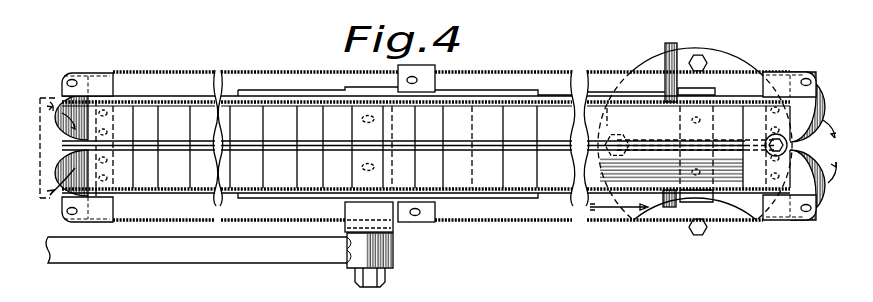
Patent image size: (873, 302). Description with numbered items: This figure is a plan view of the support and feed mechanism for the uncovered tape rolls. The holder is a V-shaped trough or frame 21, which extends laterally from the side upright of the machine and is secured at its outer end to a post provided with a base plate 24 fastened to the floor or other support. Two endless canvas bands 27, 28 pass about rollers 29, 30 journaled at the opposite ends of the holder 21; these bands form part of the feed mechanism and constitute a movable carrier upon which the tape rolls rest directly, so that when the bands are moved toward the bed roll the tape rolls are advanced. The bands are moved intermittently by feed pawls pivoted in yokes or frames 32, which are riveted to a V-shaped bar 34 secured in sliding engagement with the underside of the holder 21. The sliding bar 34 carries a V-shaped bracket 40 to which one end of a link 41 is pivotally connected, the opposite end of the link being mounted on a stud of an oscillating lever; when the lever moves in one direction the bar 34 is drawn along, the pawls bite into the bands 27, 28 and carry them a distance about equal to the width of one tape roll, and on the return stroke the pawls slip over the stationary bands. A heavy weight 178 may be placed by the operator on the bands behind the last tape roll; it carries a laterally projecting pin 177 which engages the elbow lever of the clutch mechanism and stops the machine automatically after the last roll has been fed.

The V-shaped trough or frame 21 is at (556, 193).
The base plate 24 is at (672, 242).
The endless band 27 is at (490, 219).
The endless band 28 is at (490, 72).
The roller 29 is at (806, 74).
The roller 30 is at (63, 78).
The yoke or frame 32 is at (433, 67).
The V-shaped bar 34 is at (518, 198).
The V-shaped bracket 40 is at (385, 222).
The link 41 is at (278, 264).
The pin 177 is at (667, 50).
The weight 178 is at (708, 202).